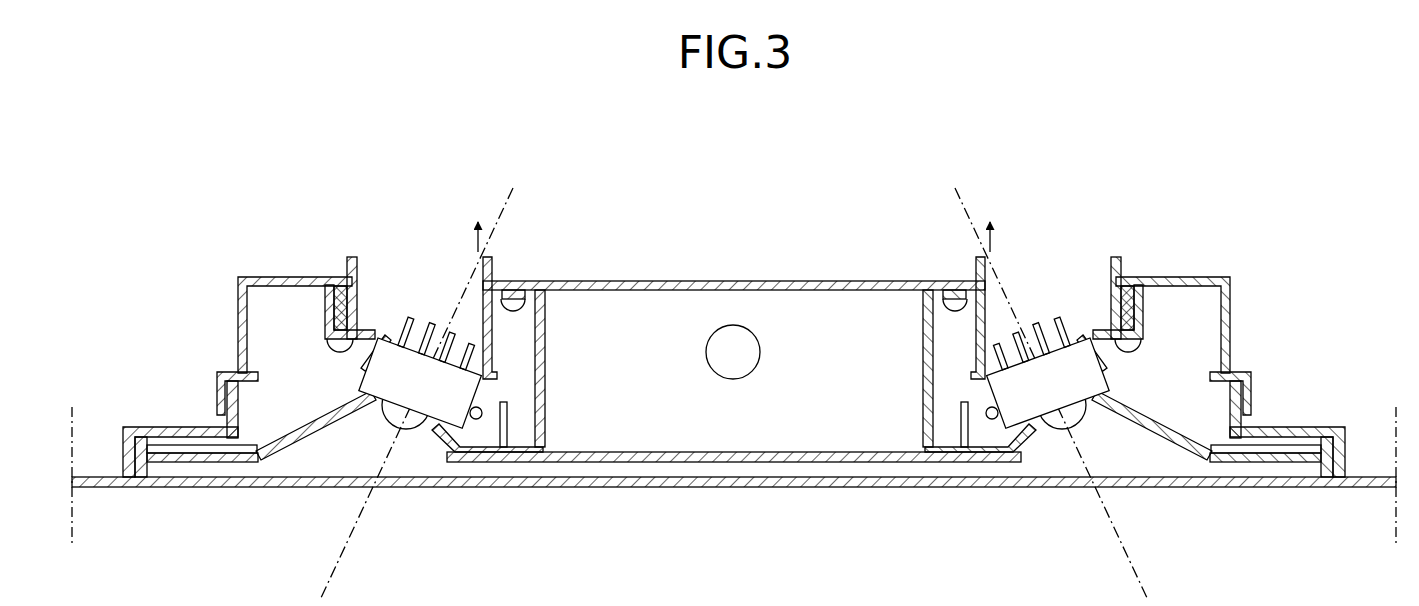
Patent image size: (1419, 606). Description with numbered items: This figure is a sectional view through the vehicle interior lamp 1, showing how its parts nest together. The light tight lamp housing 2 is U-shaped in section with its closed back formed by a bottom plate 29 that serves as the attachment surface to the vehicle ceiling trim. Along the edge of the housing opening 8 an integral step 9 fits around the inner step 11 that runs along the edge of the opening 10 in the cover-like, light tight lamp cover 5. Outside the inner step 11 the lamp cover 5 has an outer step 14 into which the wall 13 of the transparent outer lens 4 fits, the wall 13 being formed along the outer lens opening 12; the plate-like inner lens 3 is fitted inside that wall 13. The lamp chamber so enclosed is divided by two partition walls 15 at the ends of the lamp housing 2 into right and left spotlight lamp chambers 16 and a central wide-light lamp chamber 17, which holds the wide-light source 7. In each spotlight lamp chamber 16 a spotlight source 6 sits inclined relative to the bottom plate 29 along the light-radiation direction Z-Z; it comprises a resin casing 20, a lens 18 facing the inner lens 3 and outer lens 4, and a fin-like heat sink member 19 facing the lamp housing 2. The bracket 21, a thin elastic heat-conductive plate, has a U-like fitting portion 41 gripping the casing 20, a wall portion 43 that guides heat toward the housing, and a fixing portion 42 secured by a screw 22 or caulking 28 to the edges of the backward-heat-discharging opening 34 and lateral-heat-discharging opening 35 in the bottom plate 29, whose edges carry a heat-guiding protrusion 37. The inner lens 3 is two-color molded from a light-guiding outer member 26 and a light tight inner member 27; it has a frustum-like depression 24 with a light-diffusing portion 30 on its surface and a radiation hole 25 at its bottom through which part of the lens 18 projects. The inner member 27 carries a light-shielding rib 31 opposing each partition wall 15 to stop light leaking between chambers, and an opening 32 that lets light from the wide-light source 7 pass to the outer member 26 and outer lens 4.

The vehicle interior lamp 1 is at (276, 178).
The lamp housing 2 is at (700, 280).
The inner lens 3 is at (185, 466).
The outer lens 4 is at (672, 488).
The lamp cover 5 is at (128, 427).
The spotlight source 6 is at (383, 428).
The wide-light source 7 is at (733, 380).
The opening 8 is at (258, 318).
The step 9 is at (233, 400).
The opening 10 is at (243, 335).
The inner step 11 is at (218, 385).
The opening 12 is at (167, 445).
The wall 13 is at (140, 440).
The outer step 14 is at (125, 470).
The partition wall 15 is at (585, 283).
The spotlight lamp chamber 16 is at (278, 408).
The wide-light lamp chamber 17 is at (786, 379).
The lens 18 is at (400, 430).
The heat sink member 19 is at (466, 335).
The casing 20 is at (388, 345).
The bracket 21 is at (545, 350).
The screw 22 is at (328, 300).
The depression 24 is at (772, 437).
The radiation hole 25 is at (442, 452).
The outer member 26 is at (262, 462).
The inner member 27 is at (208, 462).
The caulking 28 is at (535, 288).
The bottom plate 29 is at (760, 280).
The light-diffusing portion 30 is at (458, 440).
The light-shielding rib 31 is at (505, 447).
The opening 32 is at (548, 462).
The backward-heat-discharging opening 34 is at (734, 230).
The lateral-heat-discharging opening 35 is at (342, 286).
The heat-guiding protrusion 37 is at (350, 265).
The fitting portion 41 is at (352, 351).
The fixing portion 42 is at (520, 290).
The wall portion 43 is at (492, 320).